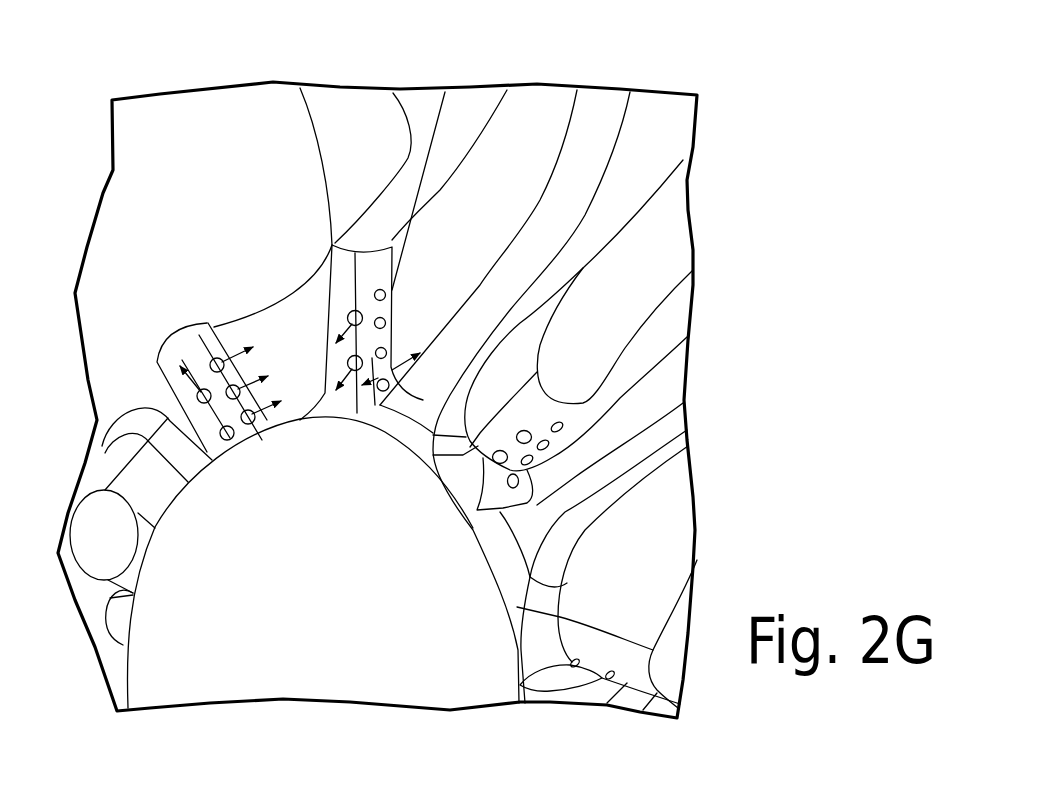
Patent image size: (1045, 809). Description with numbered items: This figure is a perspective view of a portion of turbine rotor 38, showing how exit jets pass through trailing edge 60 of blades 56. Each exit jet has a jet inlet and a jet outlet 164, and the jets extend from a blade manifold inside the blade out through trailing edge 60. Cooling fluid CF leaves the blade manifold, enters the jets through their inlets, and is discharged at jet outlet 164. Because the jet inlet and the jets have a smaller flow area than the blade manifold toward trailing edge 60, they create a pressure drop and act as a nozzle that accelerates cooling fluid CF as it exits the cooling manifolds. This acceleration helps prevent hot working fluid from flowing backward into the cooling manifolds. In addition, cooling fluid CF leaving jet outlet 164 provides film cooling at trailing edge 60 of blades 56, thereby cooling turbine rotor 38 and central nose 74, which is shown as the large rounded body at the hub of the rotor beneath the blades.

The turbine rotor 38 is at (758, 122).
The blades 56 is at (525, 130).
The trailing edge 60 is at (337, 240).
The central nose 74 is at (262, 655).
The jet outlet 164 is at (382, 289).
The cooling fluid CF is at (216, 326).